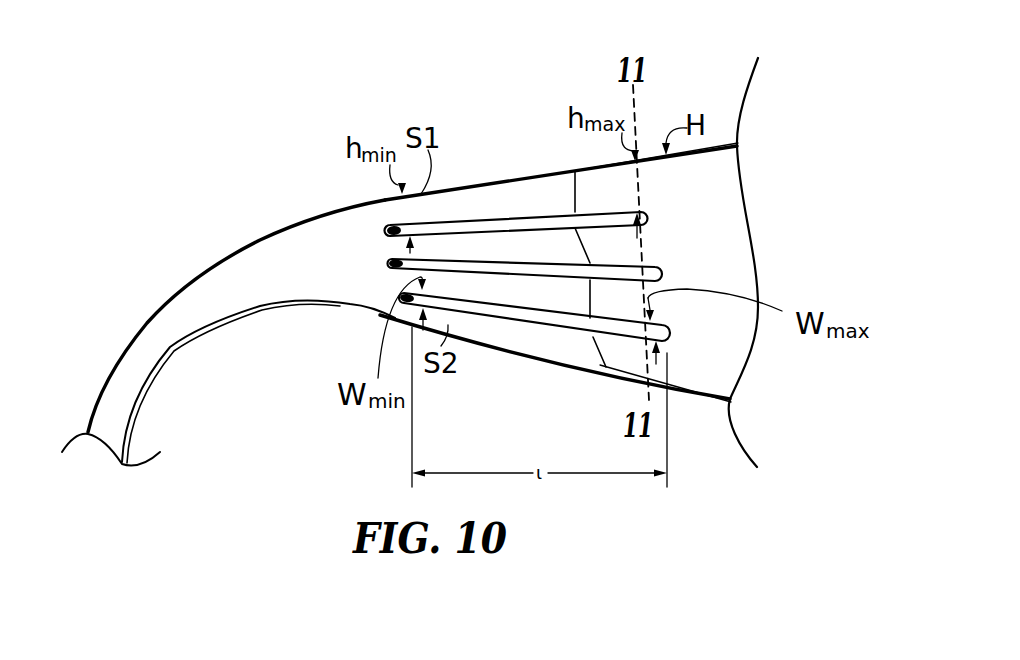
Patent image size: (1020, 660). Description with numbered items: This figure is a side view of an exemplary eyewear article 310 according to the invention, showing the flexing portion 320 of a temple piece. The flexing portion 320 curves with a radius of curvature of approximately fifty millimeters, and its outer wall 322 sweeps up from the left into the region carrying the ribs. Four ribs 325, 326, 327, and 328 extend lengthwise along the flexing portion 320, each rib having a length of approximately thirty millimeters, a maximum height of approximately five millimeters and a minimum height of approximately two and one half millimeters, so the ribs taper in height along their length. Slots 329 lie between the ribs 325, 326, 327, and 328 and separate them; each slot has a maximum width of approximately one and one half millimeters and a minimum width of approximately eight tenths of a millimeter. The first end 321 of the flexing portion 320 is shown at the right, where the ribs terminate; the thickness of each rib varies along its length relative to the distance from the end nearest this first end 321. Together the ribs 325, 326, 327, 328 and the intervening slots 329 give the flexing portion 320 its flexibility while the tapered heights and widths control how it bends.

The airfoil 310 is at (293, 97).
The flexing portion 320 is at (507, 145).
The first end 321 is at (730, 142).
The pressure side outer wall 322 is at (385, 199).
The rib 325 is at (547, 193).
The rib 326 is at (478, 250).
The rib 327 is at (565, 295).
The rib 328 is at (582, 343).
The slots 329 is at (518, 226).